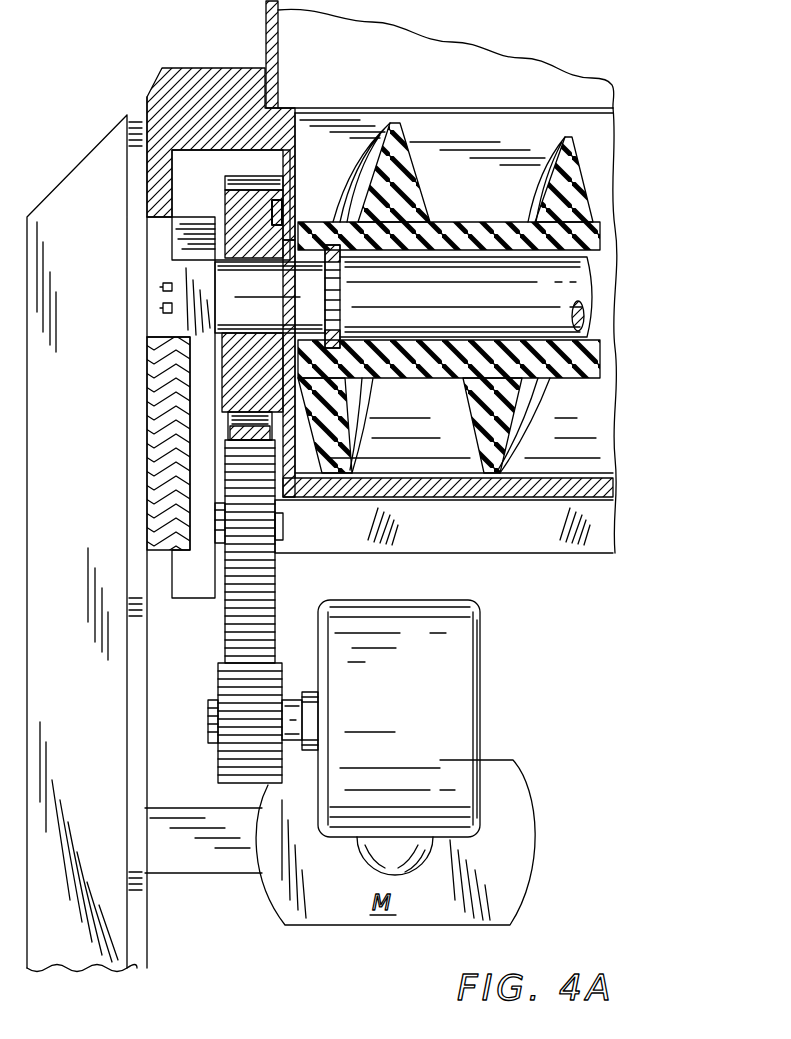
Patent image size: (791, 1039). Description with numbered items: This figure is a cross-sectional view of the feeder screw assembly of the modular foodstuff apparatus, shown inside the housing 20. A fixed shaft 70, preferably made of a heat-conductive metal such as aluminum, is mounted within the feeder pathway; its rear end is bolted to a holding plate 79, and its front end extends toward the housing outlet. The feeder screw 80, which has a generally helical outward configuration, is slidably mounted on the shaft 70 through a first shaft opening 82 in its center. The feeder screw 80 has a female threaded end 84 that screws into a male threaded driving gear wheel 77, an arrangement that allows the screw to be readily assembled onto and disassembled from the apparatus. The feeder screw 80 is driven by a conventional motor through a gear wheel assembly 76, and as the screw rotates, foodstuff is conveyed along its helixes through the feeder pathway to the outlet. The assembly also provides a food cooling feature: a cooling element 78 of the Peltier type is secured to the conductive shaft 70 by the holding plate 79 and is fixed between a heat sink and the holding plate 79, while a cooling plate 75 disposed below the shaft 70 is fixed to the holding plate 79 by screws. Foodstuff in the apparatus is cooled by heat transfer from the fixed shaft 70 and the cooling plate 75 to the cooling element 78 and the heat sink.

The housing 20 is at (221, 92).
The fixed shaft 70 is at (569, 282).
The cooling plate 75 is at (468, 540).
The gear wheel assembly 76 is at (201, 680).
The driving gear wheel 77 is at (243, 195).
The cooling element 78 is at (165, 435).
The holding plate 79 is at (185, 264).
The feeder screw 80 is at (390, 122).
The first shaft opening 82 is at (480, 262).
The female threaded end 84 is at (326, 246).